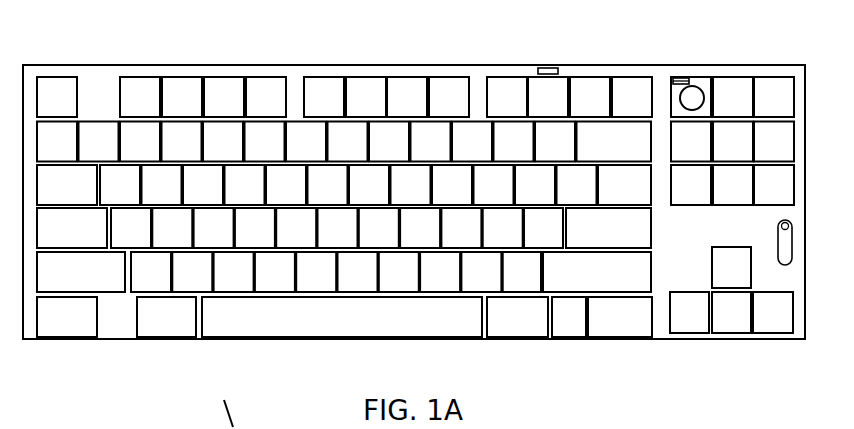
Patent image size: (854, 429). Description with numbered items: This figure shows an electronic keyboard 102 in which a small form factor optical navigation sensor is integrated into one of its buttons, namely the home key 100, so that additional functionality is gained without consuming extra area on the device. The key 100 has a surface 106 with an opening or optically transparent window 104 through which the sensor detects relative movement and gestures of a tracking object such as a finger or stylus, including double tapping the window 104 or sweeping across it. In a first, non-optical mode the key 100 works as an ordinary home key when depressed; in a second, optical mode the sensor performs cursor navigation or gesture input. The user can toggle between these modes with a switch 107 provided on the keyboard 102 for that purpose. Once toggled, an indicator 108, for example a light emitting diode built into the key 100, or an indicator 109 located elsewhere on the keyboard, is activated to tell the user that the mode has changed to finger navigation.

The key 100 is at (700, 76).
The keyboard 102 is at (101, 65).
The optically transparent window 104 is at (679, 98).
The surface 106 is at (710, 77).
The switch 107 is at (780, 226).
The indicator 108 is at (679, 77).
The indicator 109 is at (546, 67).